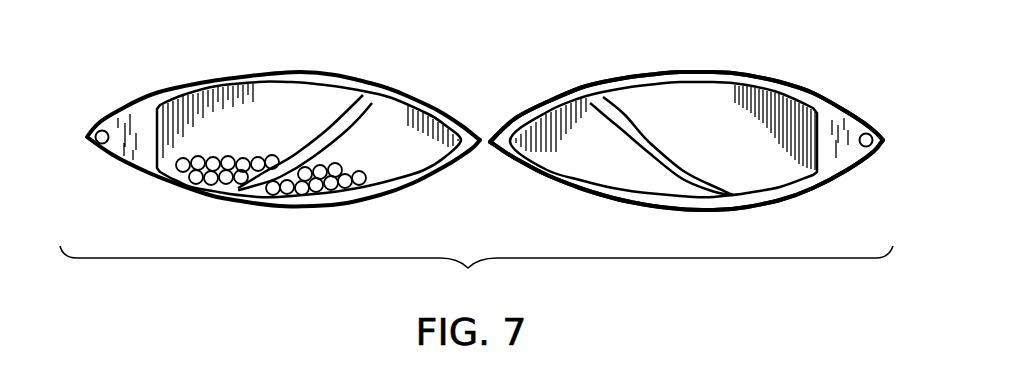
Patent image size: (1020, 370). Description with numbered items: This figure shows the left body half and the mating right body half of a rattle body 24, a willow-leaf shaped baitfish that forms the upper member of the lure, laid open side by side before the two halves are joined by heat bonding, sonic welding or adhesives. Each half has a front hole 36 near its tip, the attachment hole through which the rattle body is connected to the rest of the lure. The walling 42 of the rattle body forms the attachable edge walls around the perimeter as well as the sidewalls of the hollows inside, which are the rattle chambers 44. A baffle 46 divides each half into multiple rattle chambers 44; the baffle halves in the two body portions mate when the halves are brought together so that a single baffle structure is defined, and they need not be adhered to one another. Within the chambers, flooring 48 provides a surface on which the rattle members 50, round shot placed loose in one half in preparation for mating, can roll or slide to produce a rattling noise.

The rattle body 24 is at (853, 113).
The front hole 36 is at (96, 145).
The walling 42 is at (406, 100).
The rattle chamber 44 is at (252, 108).
The baffle 46 is at (354, 121).
The flooring 48 is at (312, 150).
The rattle member 50 is at (298, 186).